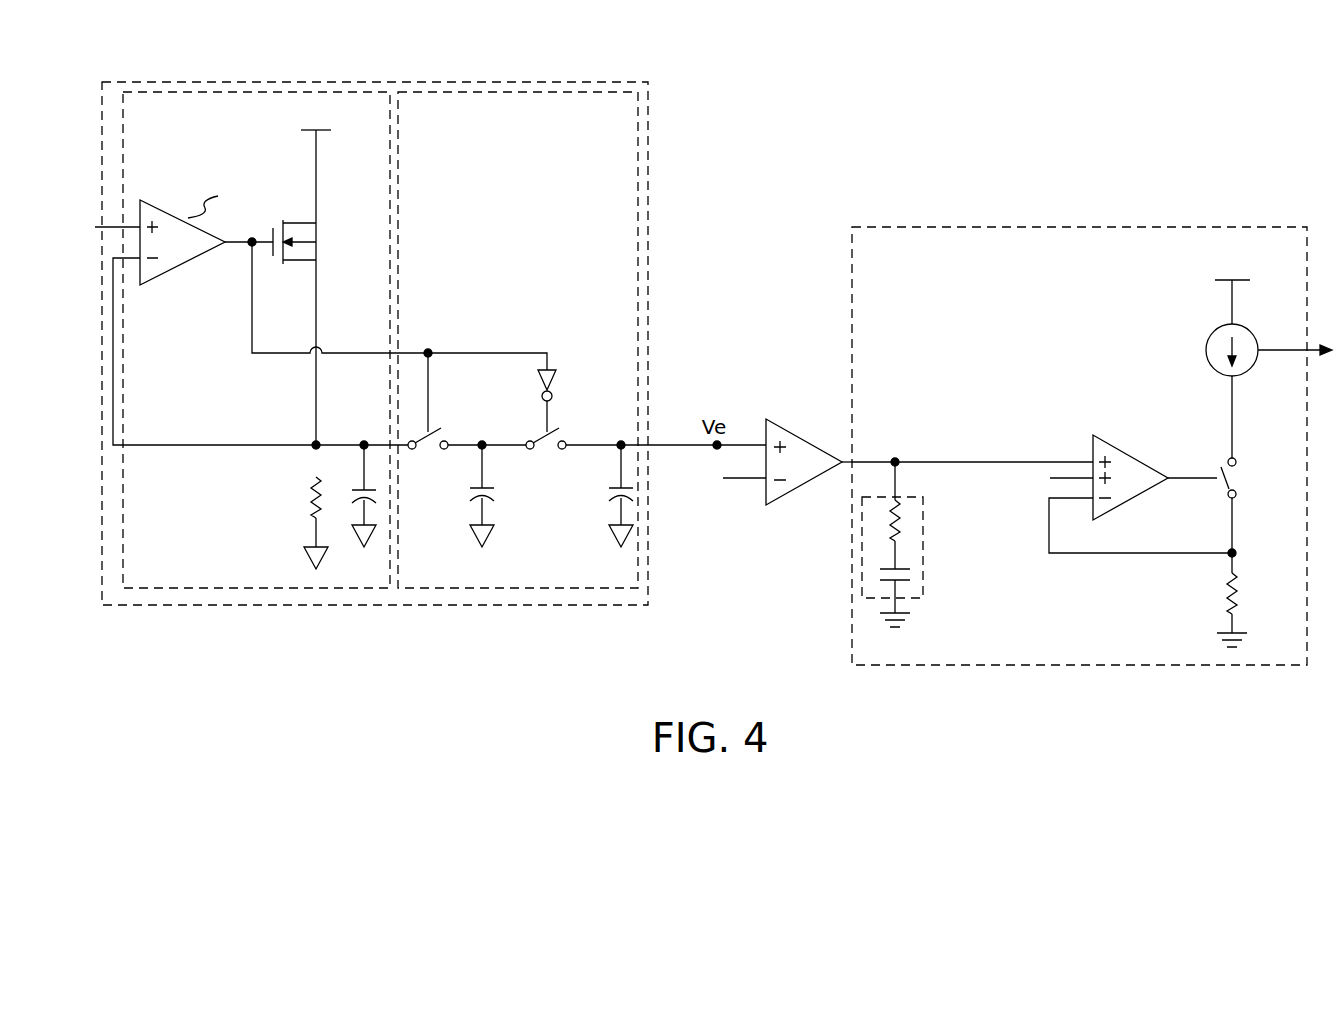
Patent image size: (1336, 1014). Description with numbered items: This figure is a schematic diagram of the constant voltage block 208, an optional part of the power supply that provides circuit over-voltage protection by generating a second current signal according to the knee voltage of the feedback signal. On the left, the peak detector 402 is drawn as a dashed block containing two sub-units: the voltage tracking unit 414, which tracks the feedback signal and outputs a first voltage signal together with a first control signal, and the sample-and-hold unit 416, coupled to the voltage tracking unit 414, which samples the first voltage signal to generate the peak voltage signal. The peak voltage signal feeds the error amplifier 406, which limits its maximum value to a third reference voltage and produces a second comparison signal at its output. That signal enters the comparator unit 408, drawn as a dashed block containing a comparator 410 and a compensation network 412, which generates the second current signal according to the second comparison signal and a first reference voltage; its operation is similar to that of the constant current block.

The constant voltage block 208 is at (1208, 127).
The peak detector 402 is at (390, 82).
The error amplifier 406 is at (794, 432).
The comparator unit 408 is at (1062, 227).
The comparator 410 is at (1118, 448).
The compensation network 412 is at (923, 545).
The voltage tracking unit 414 is at (256, 92).
The sample-and-hold unit 416 is at (523, 92).